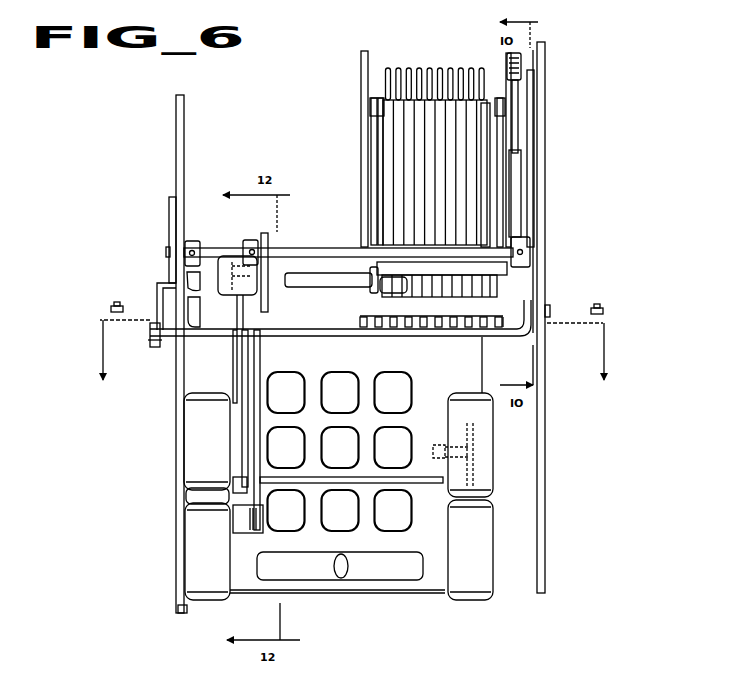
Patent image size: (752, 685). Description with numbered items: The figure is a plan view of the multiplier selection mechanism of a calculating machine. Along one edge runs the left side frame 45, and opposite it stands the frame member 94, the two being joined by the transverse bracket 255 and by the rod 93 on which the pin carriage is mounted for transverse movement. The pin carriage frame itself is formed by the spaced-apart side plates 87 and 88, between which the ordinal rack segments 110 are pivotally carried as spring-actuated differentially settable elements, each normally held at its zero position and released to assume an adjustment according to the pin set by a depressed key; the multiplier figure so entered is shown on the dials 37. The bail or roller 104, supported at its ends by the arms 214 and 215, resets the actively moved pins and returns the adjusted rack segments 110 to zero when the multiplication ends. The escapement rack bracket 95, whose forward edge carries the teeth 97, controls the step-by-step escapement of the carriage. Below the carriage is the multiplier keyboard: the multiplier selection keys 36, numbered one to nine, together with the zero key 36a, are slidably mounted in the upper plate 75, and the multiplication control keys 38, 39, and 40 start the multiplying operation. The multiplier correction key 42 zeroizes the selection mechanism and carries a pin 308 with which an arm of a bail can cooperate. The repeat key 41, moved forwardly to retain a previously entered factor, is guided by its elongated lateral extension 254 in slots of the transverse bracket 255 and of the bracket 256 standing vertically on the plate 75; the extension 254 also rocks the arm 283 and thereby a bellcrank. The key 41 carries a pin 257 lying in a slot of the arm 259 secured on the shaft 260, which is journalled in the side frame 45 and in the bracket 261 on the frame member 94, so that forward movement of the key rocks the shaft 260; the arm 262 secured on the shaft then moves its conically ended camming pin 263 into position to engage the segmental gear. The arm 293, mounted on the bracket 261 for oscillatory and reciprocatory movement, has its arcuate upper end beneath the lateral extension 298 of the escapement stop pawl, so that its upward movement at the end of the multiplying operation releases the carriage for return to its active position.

The rack segment 110 is at (389, 64).
The camming pin 263 is at (514, 77).
The side plate 87 is at (366, 165).
The arm 214 is at (377, 193).
The dial 37 is at (400, 220).
The side plate 88 is at (512, 178).
The arm 215 is at (503, 213).
The arm 262 is at (531, 228).
The bracket 261 is at (174, 233).
The arm 259 is at (262, 240).
The shaft 260 is at (282, 250).
The repeat key 41 is at (245, 288).
The pin 257 is at (272, 282).
The rod 93 is at (340, 283).
The arm 293 is at (150, 328).
The lateral extension 298 is at (176, 338).
The transverse bracket 255 is at (345, 335).
The multiplier selection key 36 is at (390, 373).
The bail or roller 104 is at (472, 318).
The escapement rack bracket 95 is at (467, 307).
The teeth 97 is at (492, 318).
The elongated lateral extension 254 is at (240, 418).
The arm 283 is at (262, 427).
The multiplication control key 40 is at (192, 447).
The frame member 94 is at (183, 497).
The multiplier correction key 42 is at (478, 396).
The pin 308 is at (445, 445).
The bracket 256 is at (410, 484).
The multiplication control key 39 is at (200, 570).
The zero key 36a is at (377, 563).
The multiplication control key 38 is at (480, 565).
The upper plate 75 is at (443, 584).
The left side frame 45 is at (544, 513).